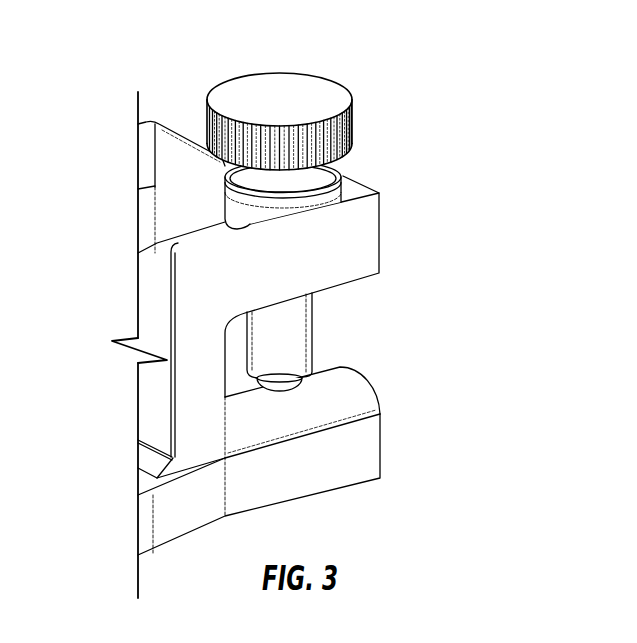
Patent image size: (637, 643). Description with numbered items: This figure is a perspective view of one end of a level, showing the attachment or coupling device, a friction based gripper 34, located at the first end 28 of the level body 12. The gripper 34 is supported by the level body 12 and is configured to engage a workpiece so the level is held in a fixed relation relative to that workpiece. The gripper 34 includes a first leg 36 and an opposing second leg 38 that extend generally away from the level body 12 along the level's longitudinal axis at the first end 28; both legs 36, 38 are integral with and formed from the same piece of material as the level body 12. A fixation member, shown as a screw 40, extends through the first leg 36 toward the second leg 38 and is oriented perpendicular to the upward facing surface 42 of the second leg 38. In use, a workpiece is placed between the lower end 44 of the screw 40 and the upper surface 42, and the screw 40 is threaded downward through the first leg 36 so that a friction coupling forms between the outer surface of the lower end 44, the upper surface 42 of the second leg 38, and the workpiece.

The level body 12 is at (166, 192).
The first end 28 is at (354, 290).
The friction based gripper 34 is at (354, 338).
The first leg 36 is at (352, 248).
The second leg 38 is at (343, 462).
The screw 40 is at (310, 97).
The upward facing surface 42 is at (350, 391).
The lower end 44 is at (287, 377).